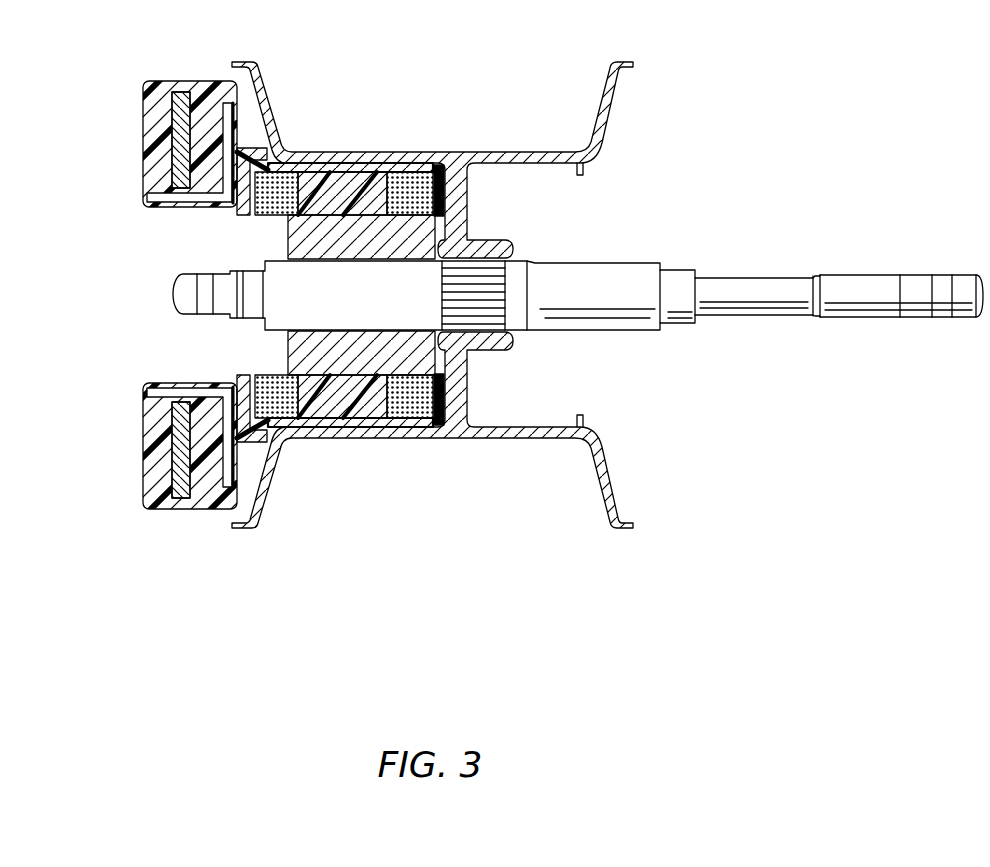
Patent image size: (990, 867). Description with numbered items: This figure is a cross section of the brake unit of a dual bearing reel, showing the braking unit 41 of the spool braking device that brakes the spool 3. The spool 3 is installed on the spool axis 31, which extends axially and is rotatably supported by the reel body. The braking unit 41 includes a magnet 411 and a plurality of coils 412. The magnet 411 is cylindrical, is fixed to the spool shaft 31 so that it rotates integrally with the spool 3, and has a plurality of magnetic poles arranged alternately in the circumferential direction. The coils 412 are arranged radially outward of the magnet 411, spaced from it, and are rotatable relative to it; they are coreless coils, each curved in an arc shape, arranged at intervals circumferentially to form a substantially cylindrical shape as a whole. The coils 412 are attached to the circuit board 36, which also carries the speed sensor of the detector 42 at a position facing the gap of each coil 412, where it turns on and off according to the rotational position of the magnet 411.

The spool 3 is at (455, 128).
The spool axis 31 is at (613, 263).
The circuit board 36 is at (203, 472).
The braking unit 41 is at (262, 236).
The magnet 411 is at (290, 348).
The coils 412 is at (410, 397).
The detector 42 is at (148, 197).